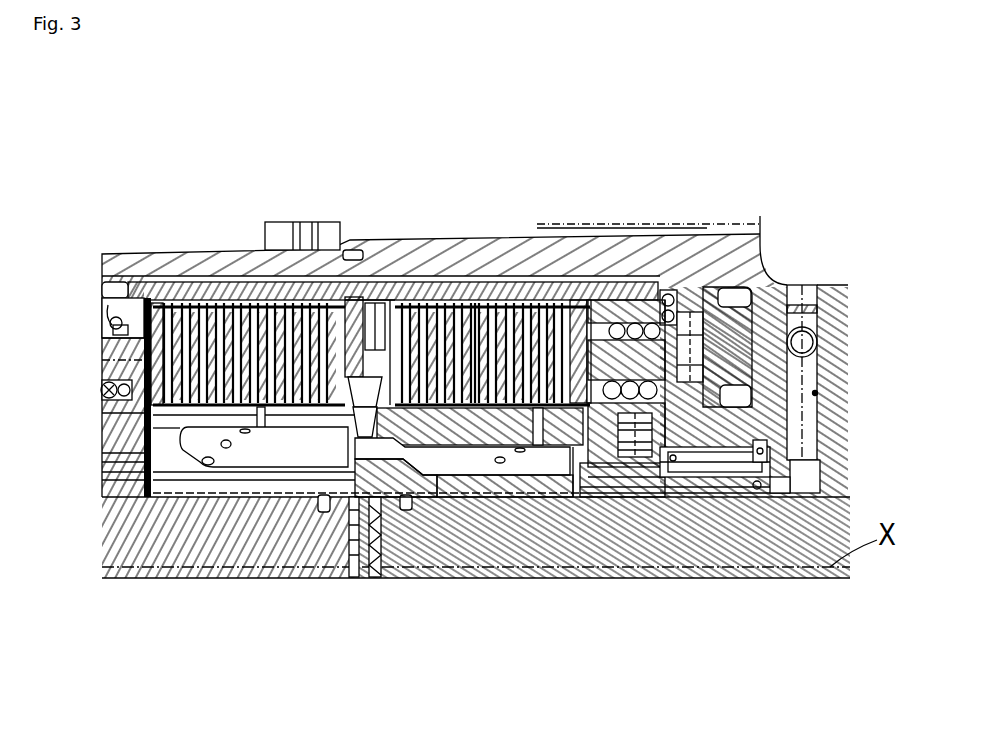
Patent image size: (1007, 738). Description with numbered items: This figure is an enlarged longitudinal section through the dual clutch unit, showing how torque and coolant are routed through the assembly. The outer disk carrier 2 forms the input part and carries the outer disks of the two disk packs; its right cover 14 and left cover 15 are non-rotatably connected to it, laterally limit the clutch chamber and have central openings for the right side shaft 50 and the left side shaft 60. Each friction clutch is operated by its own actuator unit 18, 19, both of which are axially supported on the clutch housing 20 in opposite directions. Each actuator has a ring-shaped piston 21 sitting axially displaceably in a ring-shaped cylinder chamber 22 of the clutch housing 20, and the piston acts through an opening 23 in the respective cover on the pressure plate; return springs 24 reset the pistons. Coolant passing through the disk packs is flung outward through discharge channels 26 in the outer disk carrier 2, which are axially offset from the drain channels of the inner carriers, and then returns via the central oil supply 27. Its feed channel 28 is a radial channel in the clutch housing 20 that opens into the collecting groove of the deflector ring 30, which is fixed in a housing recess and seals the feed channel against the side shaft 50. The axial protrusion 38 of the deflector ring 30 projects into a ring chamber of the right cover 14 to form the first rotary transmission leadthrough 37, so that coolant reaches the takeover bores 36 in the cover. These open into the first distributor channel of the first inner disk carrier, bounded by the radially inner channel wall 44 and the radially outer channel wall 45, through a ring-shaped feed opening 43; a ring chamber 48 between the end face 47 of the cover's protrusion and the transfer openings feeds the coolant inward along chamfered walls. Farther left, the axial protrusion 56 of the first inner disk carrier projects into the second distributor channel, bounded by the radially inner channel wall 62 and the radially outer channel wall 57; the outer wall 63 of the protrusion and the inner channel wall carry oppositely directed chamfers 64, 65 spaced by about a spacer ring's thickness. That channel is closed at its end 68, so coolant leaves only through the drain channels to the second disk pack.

The outer disk carrier 2 is at (157, 283).
The right cover 14 is at (605, 417).
The left cover 15 is at (110, 477).
The actuator unit 18 is at (692, 288).
The actuator unit 19 is at (96, 324).
The clutch housing 20 is at (840, 283).
The piston 21 is at (117, 355).
The cylinder chamber 22 is at (693, 405).
The opening 23 is at (113, 283).
The return spring 24 is at (103, 390).
The discharge channel 26 is at (185, 303).
The central oil supply 27 is at (805, 278).
The feed channel 28 is at (812, 393).
The deflector ring 30 is at (823, 470).
The takeover bore 36 is at (650, 483).
The first rotary transmission leadthrough 37 is at (748, 480).
The axial protrusion 38 is at (783, 445).
The feed opening 43 is at (593, 483).
The radially inner channel wall 44 is at (427, 462).
The radially outer channel wall 45 is at (478, 300).
The end face 47 is at (537, 483).
The ring chamber 48 is at (563, 483).
The right side shaft 50 is at (810, 573).
The axial protrusion 56 is at (355, 295).
The radially outer channel wall 57 is at (300, 473).
The left side shaft 60 is at (185, 450).
The radially inner channel wall 62 is at (232, 462).
The outer wall 63 is at (303, 430).
The chamfer 64 is at (377, 530).
The chamfer 65 is at (335, 450).
The end 68 is at (150, 497).